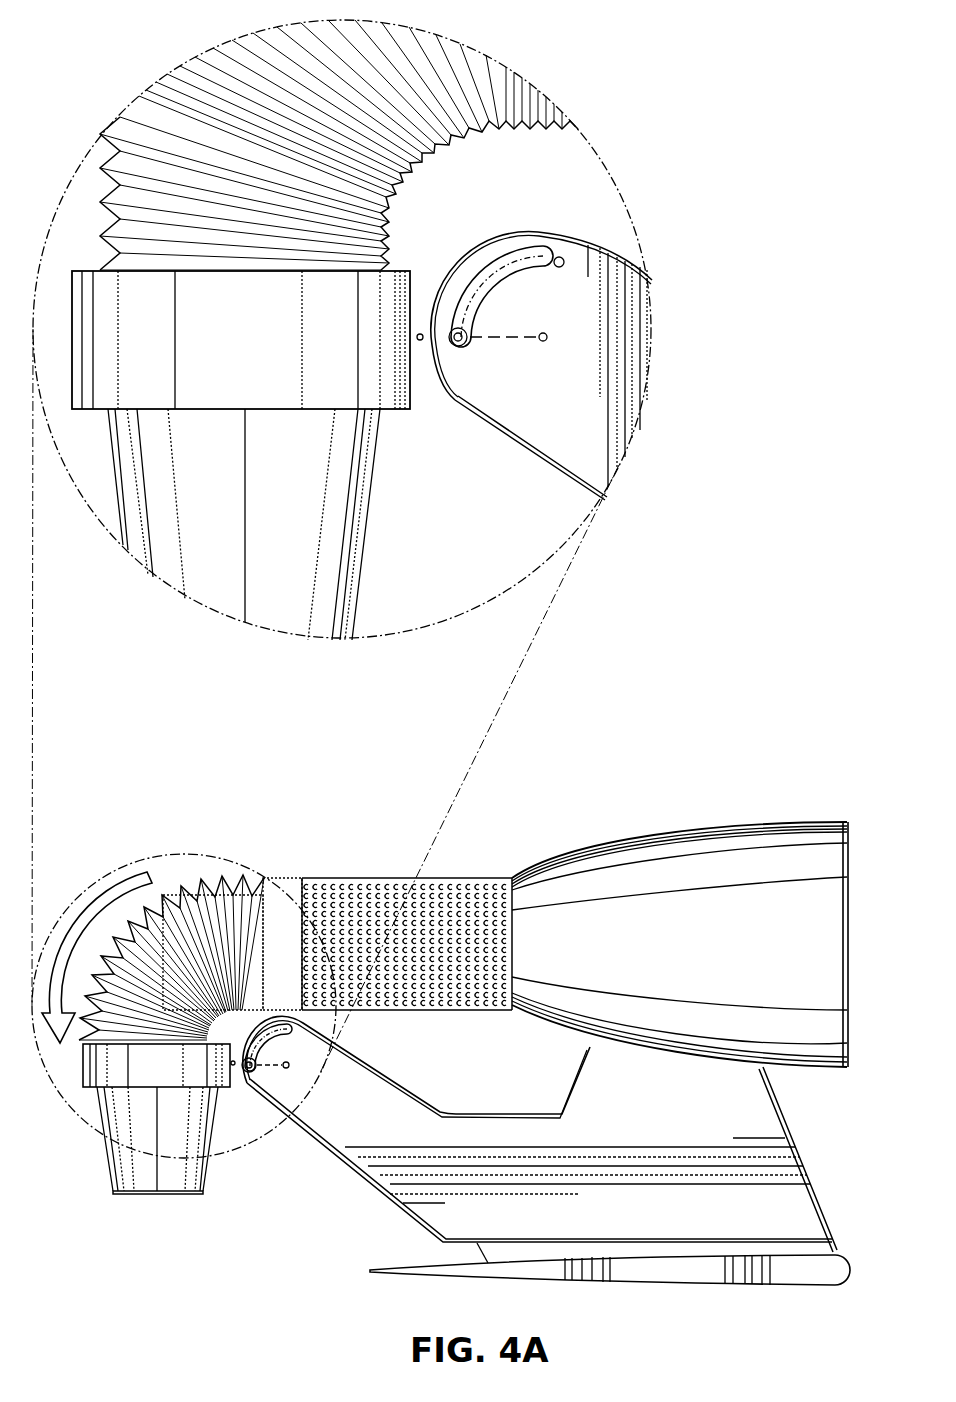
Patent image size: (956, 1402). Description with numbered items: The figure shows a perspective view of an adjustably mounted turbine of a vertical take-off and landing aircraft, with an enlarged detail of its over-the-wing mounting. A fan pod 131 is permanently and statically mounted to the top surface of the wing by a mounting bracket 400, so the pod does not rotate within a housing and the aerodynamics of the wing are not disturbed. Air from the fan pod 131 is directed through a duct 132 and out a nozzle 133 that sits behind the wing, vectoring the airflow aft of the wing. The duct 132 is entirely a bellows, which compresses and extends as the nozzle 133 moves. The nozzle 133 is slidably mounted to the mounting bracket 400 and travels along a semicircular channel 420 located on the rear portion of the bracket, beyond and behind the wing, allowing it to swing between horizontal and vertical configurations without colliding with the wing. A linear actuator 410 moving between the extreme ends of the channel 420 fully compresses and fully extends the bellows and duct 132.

The fan pod 131 is at (713, 822).
The duct 132 is at (450, 877).
The nozzle 133 is at (108, 1180).
The mounting bracket 400 is at (800, 1150).
The linear actuator 410 is at (456, 330).
The channel 420 is at (557, 218).